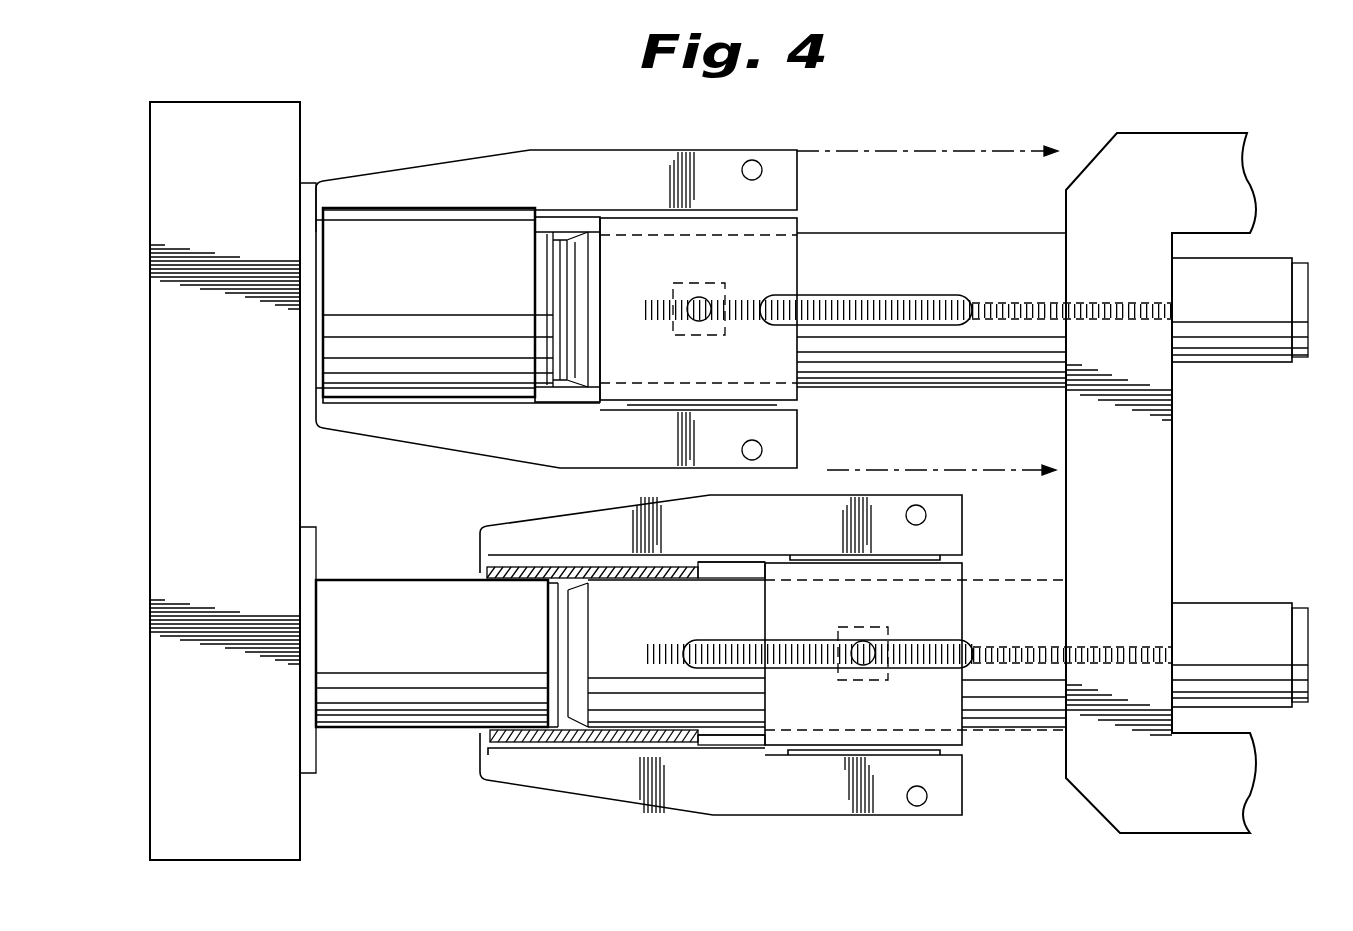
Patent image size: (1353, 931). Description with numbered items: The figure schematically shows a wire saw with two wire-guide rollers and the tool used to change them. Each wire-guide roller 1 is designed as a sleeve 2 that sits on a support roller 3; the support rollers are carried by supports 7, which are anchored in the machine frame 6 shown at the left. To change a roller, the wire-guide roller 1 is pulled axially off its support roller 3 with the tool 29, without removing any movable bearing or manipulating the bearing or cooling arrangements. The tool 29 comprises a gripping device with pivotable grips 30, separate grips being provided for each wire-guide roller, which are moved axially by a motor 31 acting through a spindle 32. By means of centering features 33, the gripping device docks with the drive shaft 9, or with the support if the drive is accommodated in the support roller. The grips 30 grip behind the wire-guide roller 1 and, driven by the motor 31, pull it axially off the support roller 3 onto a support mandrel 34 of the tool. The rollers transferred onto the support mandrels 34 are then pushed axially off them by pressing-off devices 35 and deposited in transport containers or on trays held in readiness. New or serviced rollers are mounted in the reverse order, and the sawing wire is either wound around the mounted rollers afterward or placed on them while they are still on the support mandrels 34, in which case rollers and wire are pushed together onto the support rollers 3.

The wire-guide roller 1 is at (389, 205).
The sleeve 2 is at (596, 737).
The support roller 3 is at (392, 708).
The machine frame 6 is at (290, 826).
The support 7 is at (312, 558).
The drive shaft 9 is at (542, 268).
The tool 29 is at (790, 393).
The pivotable grips 30 is at (517, 172).
The motor 31 is at (1218, 342).
The spindle 32 is at (850, 302).
The centering features 33 is at (557, 306).
The support mandrel 34 is at (590, 295).
The pressing-off device 35 is at (571, 220).